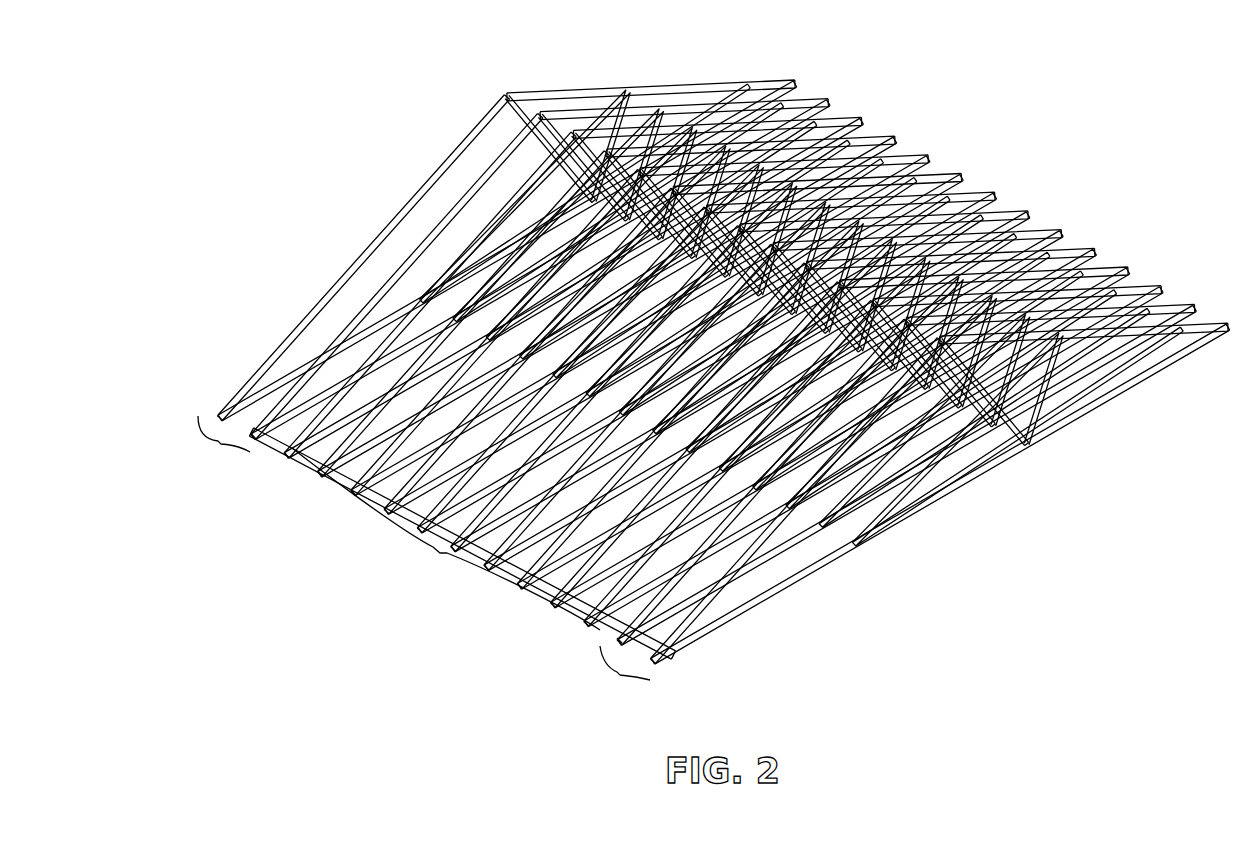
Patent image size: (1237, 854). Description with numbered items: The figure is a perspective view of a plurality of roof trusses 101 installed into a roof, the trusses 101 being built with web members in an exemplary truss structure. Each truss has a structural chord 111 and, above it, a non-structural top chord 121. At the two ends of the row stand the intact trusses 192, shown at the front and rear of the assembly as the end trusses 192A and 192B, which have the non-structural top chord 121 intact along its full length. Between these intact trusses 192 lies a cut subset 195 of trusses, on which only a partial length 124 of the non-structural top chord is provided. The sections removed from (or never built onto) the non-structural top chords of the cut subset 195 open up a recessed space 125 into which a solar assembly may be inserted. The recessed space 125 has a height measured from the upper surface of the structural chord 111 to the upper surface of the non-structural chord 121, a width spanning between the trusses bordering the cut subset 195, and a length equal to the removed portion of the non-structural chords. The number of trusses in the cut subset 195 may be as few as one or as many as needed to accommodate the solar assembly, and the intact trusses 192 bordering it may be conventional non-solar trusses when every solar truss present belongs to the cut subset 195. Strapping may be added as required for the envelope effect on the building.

The roof truss 101 is at (325, 120).
The structural chord 111 is at (723, 361).
The non-structural top chord 121 is at (408, 193).
The partial length of non-structural top chord 124 is at (562, 128).
The recessed space 125 is at (363, 453).
The intact truss 192 is at (418, 557).
The first end 192A is at (262, 440).
The second end 192B is at (603, 635).
The cut subset 195 is at (446, 539).